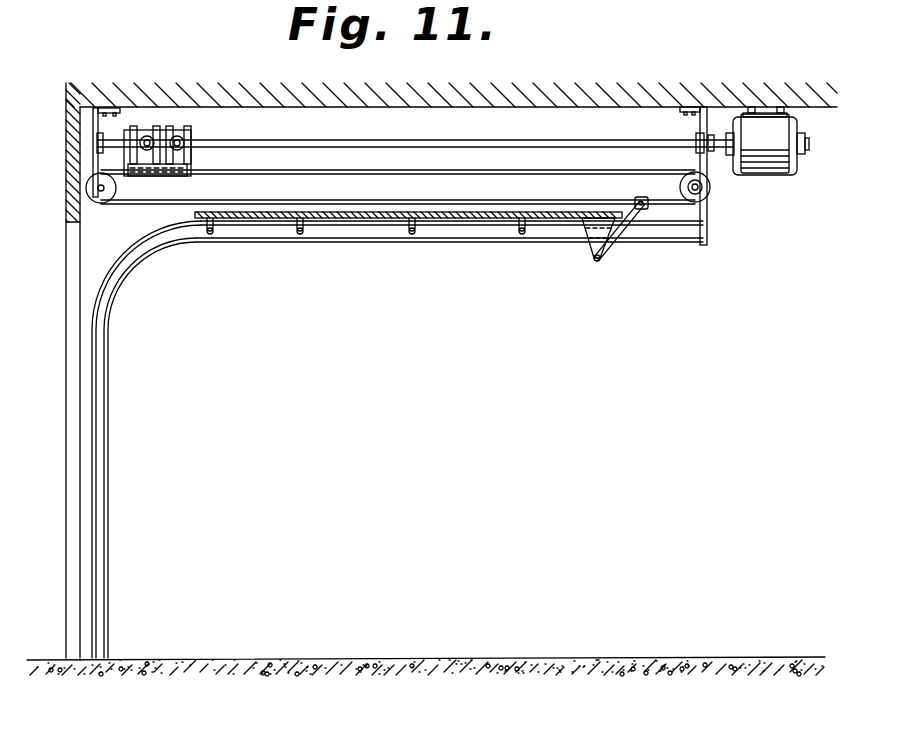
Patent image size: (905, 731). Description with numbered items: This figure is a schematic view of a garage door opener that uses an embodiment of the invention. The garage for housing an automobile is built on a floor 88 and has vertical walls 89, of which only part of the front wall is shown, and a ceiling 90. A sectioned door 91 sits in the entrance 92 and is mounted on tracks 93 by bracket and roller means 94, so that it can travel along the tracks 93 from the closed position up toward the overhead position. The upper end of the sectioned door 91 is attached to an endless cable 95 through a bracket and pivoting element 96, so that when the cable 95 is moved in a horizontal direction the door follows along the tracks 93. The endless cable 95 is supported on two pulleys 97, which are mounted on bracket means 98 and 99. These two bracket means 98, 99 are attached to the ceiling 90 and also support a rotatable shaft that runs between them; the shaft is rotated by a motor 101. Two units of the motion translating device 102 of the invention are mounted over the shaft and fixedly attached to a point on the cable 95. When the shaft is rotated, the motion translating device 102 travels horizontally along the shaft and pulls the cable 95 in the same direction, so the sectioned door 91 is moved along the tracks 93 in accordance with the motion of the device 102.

The floor 88 is at (288, 660).
The vertical walls 89 is at (68, 154).
The ceiling 90 is at (640, 64).
The sectioned door 91 is at (282, 224).
The entrance 92 is at (80, 563).
The tracks 93 is at (104, 482).
The bracket and roller means 94 is at (412, 234).
The endless cable 95 is at (677, 202).
The bracket and pivoting element 96 is at (614, 252).
The pulleys 97 is at (113, 198).
The bracket means 98 is at (97, 107).
The bracket means 99 is at (703, 106).
The motor 101 is at (778, 172).
The motion translating device 102 is at (172, 125).